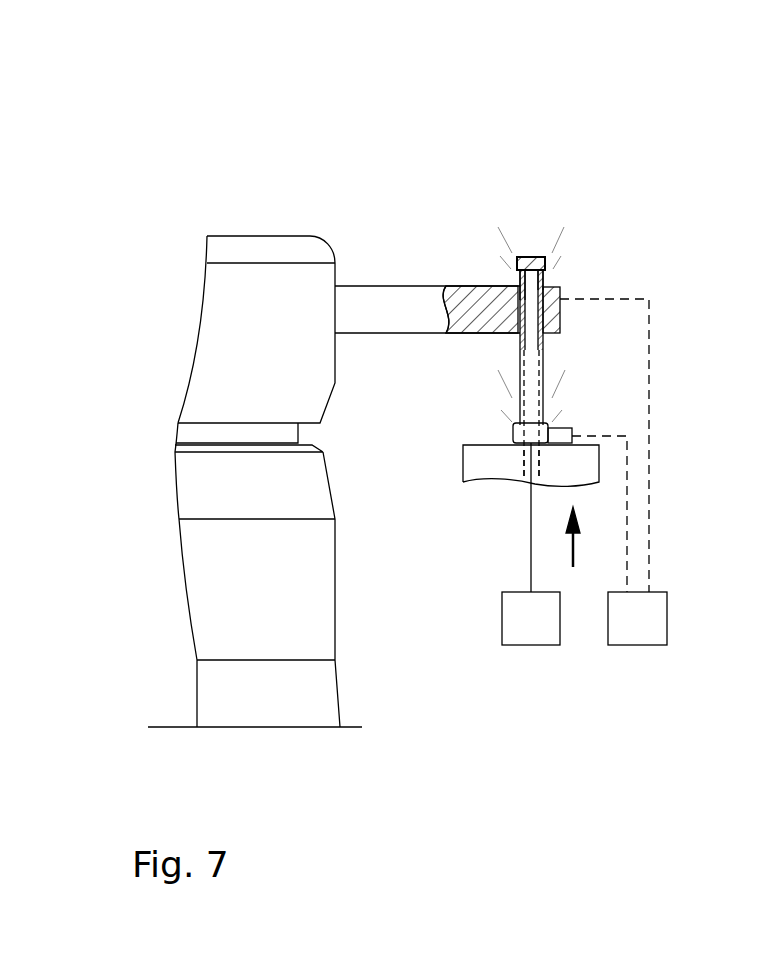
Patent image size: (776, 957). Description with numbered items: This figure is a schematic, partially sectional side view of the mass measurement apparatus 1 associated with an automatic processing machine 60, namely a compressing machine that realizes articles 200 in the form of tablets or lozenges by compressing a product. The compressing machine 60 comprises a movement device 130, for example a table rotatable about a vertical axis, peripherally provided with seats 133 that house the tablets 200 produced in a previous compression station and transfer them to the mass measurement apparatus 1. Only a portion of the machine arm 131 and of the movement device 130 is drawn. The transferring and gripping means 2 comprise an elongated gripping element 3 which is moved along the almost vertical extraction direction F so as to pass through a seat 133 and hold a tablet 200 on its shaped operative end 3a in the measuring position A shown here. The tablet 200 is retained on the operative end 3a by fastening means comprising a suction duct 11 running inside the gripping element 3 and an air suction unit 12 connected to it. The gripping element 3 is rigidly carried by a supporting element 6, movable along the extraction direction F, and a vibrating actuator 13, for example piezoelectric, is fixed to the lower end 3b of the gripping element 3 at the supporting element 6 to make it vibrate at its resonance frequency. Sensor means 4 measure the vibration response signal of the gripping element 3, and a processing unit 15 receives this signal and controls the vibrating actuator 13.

The mass measurement apparatus 1 is at (525, 685).
The transferring and gripping means 2 is at (590, 388).
The gripping element 3 is at (515, 348).
The operative end 3a is at (517, 280).
The lower end 3b is at (519, 424).
The sensor means 4 is at (547, 277).
The supporting element 6 is at (508, 470).
The suction duct 11 is at (530, 398).
The air suction unit 12 is at (515, 625).
The vibrating actuator 13 is at (573, 430).
The processing unit 15 is at (630, 627).
The automatic processing machine 60 is at (200, 150).
The movement device 130 is at (300, 285).
The robot arm 131 is at (378, 305).
The seat 133 is at (555, 320).
The article 200 is at (525, 257).
The measuring position A is at (630, 134).
The extraction direction F is at (587, 537).